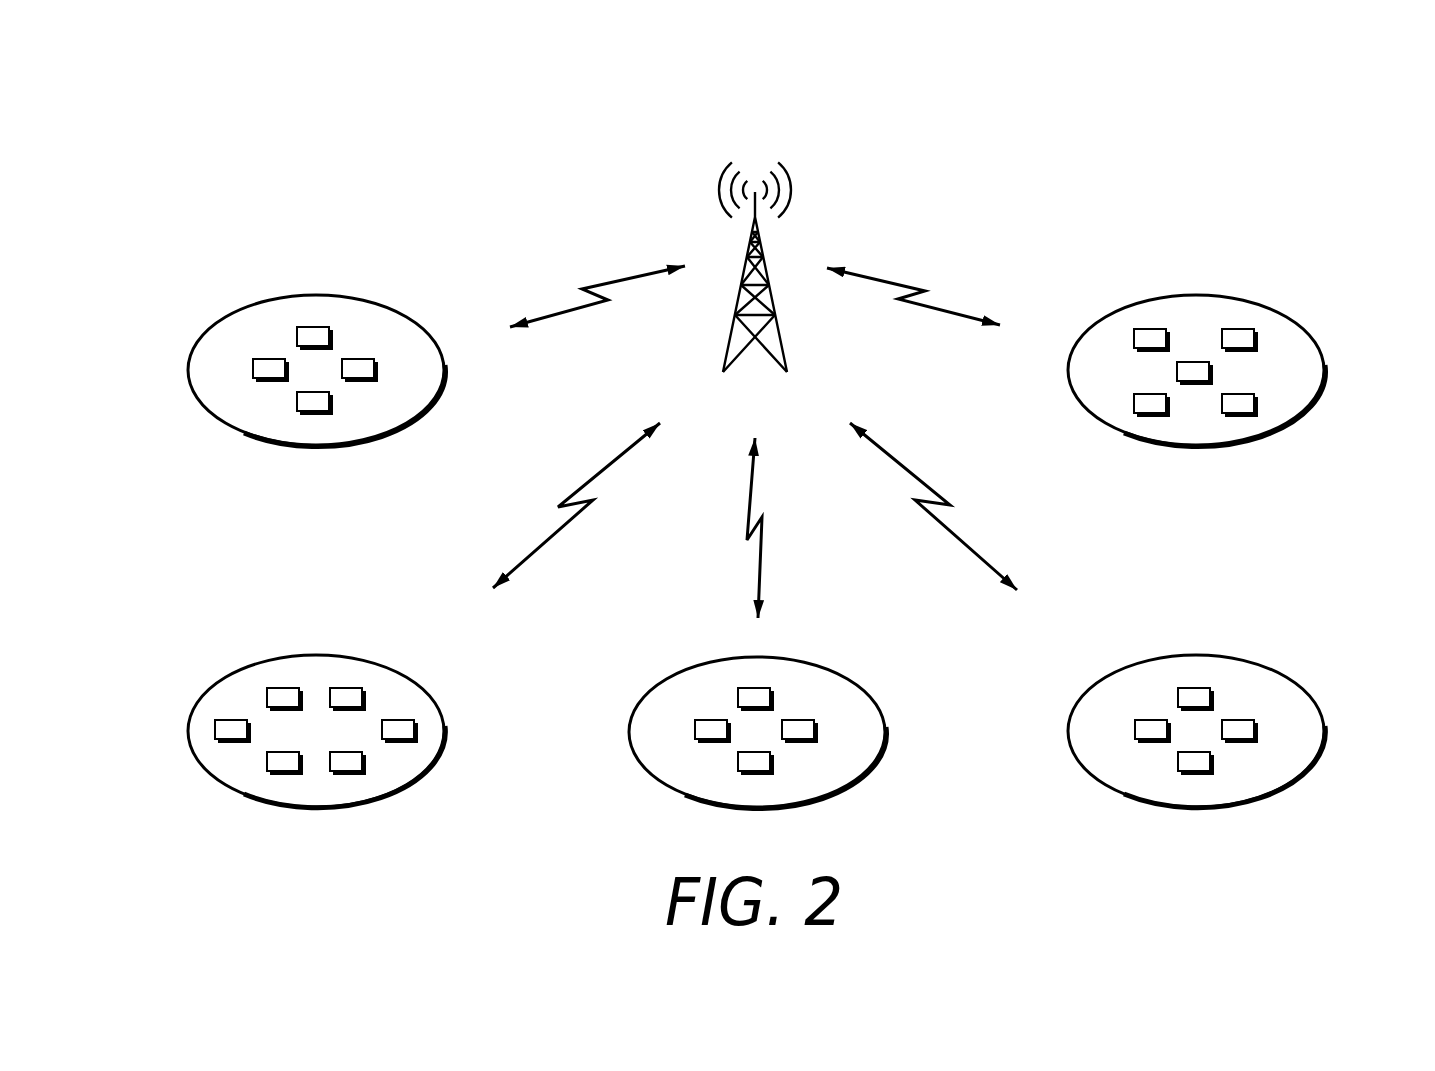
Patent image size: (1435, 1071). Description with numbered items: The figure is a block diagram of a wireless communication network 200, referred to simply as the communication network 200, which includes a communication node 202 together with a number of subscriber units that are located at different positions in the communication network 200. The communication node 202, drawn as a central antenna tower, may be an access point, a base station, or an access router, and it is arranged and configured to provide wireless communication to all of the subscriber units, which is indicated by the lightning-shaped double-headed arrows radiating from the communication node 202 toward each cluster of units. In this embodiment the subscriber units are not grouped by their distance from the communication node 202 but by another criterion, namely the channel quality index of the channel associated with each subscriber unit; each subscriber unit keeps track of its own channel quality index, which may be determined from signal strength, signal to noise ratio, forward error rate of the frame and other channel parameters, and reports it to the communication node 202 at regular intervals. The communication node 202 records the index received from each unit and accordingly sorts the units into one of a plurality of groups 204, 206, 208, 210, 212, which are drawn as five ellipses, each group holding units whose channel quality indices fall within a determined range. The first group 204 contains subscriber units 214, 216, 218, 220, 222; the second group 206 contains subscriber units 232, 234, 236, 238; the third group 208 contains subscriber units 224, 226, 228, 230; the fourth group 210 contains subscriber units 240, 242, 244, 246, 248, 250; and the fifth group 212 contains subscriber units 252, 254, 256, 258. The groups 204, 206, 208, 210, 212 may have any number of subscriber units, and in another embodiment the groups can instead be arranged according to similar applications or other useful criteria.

The wireless communication network 200 is at (1328, 84).
The communication node 202 is at (787, 178).
The group 204 is at (1325, 370).
The group 206 is at (1293, 676).
The group 208 is at (845, 676).
The group 210 is at (420, 690).
The group 212 is at (405, 313).
The subscriber unit 214 is at (1150, 329).
The subscriber unit 216 is at (1238, 329).
The subscriber unit 218 is at (1238, 417).
The subscriber unit 220 is at (1195, 362).
The subscriber unit 222 is at (1150, 417).
The subscriber unit 224 is at (755, 688).
The subscriber unit 226 is at (820, 731).
The subscriber unit 228 is at (755, 775).
The subscriber unit 230 is at (695, 731).
The subscriber unit 232 is at (1195, 688).
The subscriber unit 234 is at (1260, 731).
The subscriber unit 236 is at (1195, 775).
The subscriber unit 238 is at (1135, 731).
The subscriber unit 240 is at (346, 688).
The subscriber unit 242 is at (420, 731).
The subscriber unit 244 is at (346, 775).
The subscriber unit 246 is at (283, 688).
The subscriber unit 248 is at (283, 775).
The subscriber unit 250 is at (215, 731).
The subscriber unit 252 is at (253, 370).
The subscriber unit 254 is at (314, 327).
The subscriber unit 256 is at (380, 370).
The subscriber unit 258 is at (314, 415).